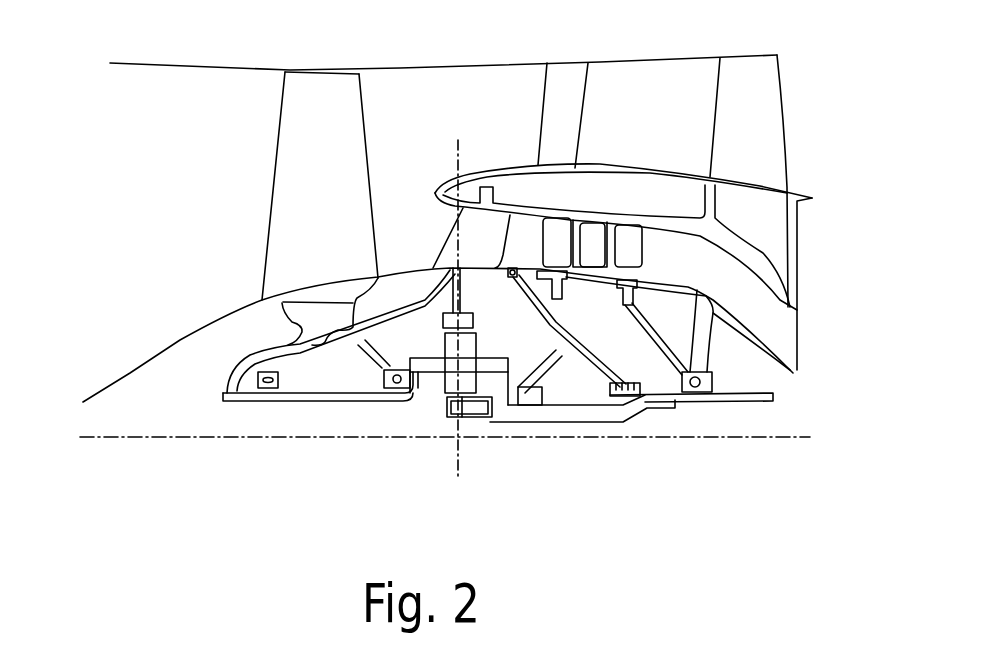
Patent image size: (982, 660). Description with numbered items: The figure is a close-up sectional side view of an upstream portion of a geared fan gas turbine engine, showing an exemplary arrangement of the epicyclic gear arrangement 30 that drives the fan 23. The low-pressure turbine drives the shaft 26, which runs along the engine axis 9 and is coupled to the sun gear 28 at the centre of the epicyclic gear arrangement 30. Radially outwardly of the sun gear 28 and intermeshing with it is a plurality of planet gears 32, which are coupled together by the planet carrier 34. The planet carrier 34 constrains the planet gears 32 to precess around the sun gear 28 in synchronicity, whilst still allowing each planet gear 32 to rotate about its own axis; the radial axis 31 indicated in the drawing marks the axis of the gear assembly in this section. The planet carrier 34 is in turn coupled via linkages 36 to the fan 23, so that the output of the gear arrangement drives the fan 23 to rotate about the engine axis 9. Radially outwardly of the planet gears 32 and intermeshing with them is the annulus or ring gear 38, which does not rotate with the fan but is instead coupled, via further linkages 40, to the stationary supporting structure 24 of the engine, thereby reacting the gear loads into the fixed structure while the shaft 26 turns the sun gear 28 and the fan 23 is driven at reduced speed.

The engine axis 9 is at (252, 440).
The fan 23 is at (290, 187).
The stationary supporting structure 24 is at (468, 233).
The shaft 26 is at (597, 423).
The sun gear 28 is at (462, 407).
The epicyclic gear arrangement 30 is at (415, 413).
The radial axis 31 is at (460, 157).
The planet gears 32 is at (447, 382).
The planet carrier 34 is at (497, 395).
The linkages 36 is at (420, 383).
The ring gear 38 is at (443, 320).
The linkages 40 is at (463, 302).